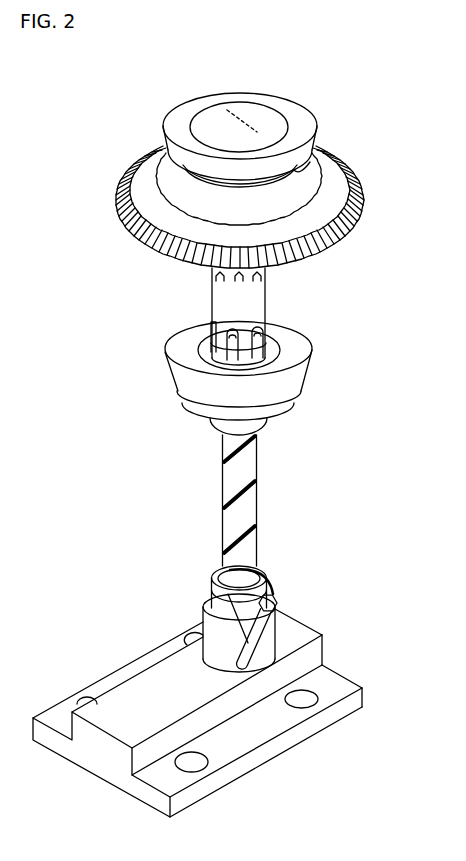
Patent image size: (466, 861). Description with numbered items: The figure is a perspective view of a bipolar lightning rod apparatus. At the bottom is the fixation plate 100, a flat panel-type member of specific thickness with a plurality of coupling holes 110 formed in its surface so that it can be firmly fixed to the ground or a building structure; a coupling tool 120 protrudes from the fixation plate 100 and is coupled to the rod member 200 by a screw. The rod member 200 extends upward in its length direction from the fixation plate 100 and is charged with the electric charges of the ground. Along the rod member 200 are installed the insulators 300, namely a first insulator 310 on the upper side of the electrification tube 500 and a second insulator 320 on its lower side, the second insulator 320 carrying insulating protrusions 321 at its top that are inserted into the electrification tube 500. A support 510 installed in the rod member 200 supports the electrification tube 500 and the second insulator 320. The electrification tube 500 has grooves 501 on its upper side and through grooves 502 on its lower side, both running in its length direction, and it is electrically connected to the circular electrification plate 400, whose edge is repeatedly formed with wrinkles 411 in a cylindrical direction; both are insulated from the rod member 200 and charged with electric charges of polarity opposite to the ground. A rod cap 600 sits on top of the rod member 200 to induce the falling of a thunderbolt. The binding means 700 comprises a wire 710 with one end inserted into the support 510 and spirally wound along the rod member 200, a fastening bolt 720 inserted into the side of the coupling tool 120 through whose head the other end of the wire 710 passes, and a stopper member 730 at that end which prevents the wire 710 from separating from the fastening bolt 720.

The fixation plate 100 is at (197, 713).
The coupling holes 110 is at (197, 766).
The coupling tool 120 is at (268, 643).
The rod member 200 is at (232, 483).
The insulators 300 is at (272, 273).
The first insulator 310 is at (300, 180).
The second insulator 320 is at (278, 386).
The insulating protrusions 321 is at (266, 345).
The electrification plate 400 is at (272, 202).
The wrinkles 411 is at (348, 225).
The electrification tube 500 is at (241, 326).
The grooves 501 is at (217, 278).
The through grooves 502 is at (219, 351).
The support 510 is at (222, 431).
The rod cap 600 is at (295, 99).
The binding means 700 is at (288, 596).
The wire 710 is at (252, 549).
The fastening bolt 720 is at (301, 593).
The stopper member 730 is at (257, 570).